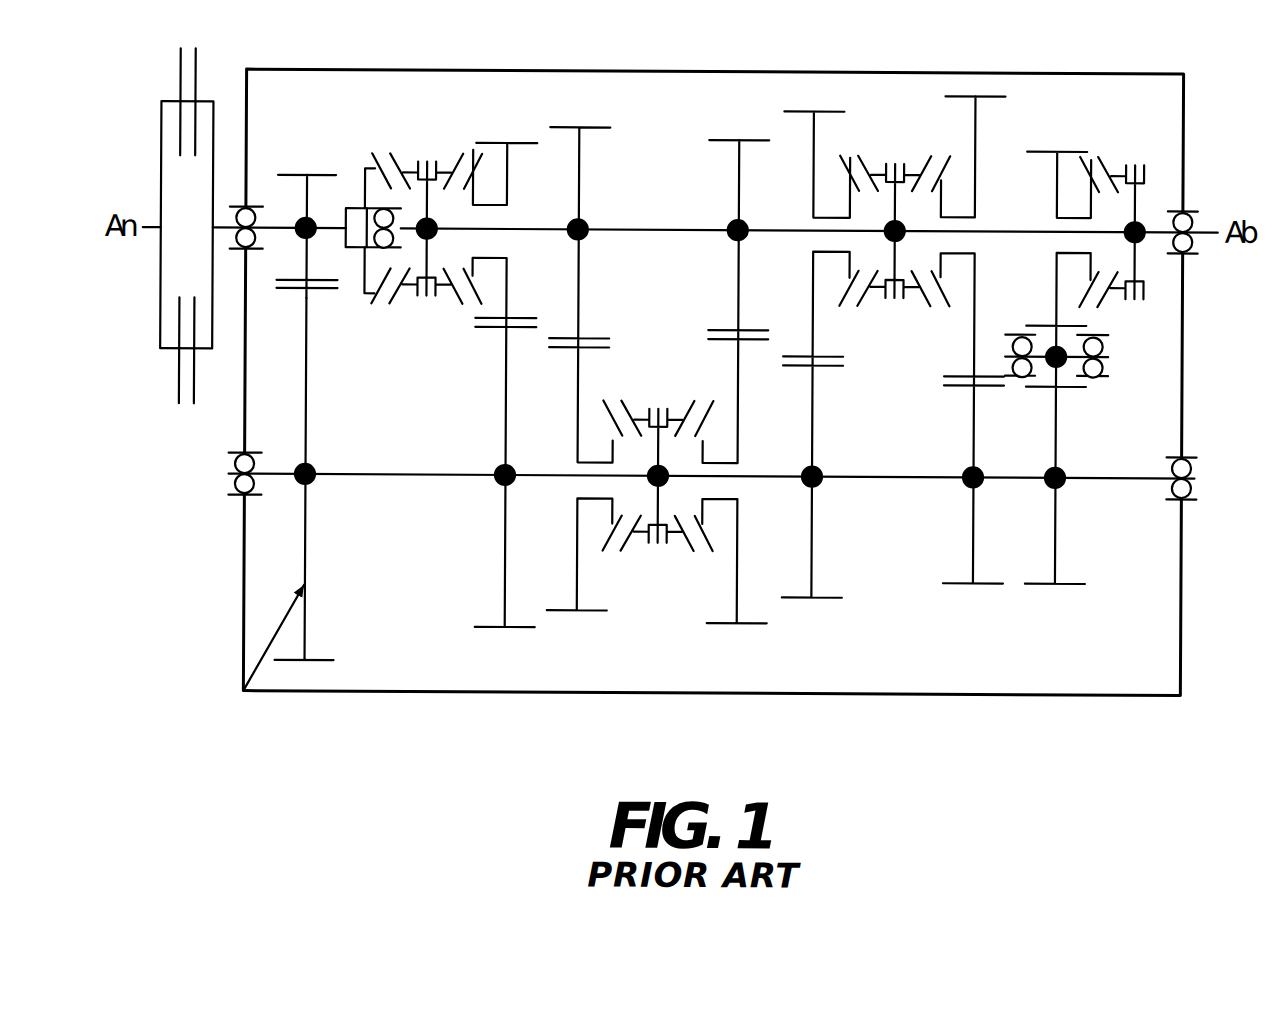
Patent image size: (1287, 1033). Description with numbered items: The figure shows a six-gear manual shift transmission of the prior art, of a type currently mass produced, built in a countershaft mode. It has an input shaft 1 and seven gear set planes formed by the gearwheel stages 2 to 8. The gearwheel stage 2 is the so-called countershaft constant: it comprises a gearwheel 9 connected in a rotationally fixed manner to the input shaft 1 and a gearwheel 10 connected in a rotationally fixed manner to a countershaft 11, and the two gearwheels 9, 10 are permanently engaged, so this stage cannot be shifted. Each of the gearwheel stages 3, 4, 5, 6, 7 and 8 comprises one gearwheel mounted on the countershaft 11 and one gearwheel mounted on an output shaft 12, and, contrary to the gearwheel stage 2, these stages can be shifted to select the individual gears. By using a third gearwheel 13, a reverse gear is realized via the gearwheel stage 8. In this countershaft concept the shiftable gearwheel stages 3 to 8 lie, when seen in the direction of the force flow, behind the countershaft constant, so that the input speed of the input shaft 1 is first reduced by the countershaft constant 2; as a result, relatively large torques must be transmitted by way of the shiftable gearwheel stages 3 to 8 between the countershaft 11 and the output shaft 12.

The input shaft 1 is at (278, 229).
The gearwheel stage 2 is at (318, 674).
The gearwheel stage 3 is at (511, 640).
The gearwheel stage 4 is at (598, 621).
The gearwheel stage 5 is at (758, 630).
The gearwheel stage 6 is at (843, 612).
The gearwheel stage 7 is at (978, 602).
The gearwheel stage 8 is at (1073, 601).
The gearwheel 9 is at (310, 203).
The gearwheel 10 is at (305, 558).
The countershaft 11 is at (408, 476).
The output shaft 12 is at (1212, 230).
The third gearwheel 13 is at (1107, 378).